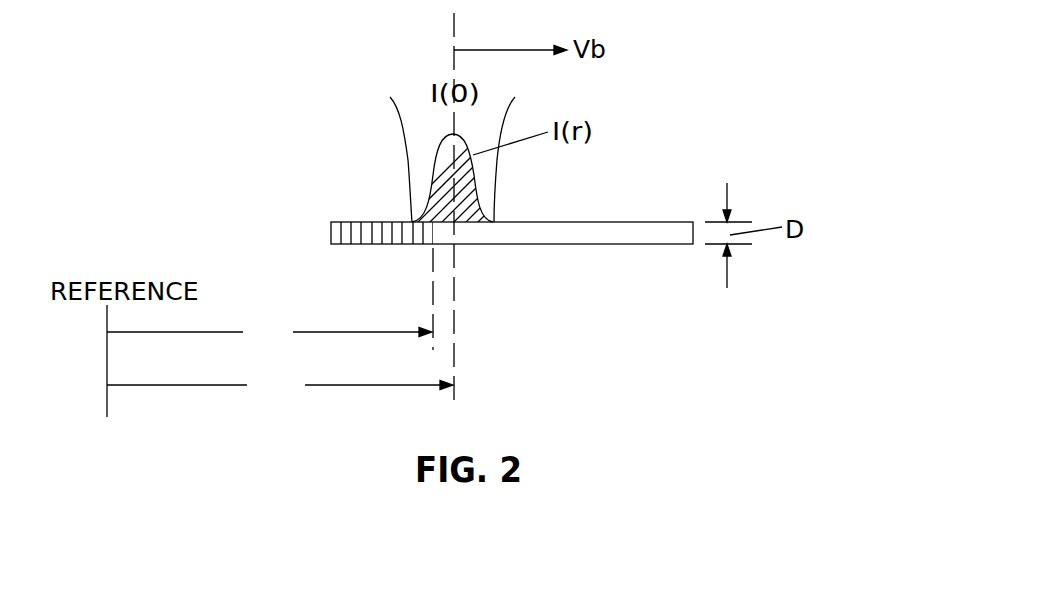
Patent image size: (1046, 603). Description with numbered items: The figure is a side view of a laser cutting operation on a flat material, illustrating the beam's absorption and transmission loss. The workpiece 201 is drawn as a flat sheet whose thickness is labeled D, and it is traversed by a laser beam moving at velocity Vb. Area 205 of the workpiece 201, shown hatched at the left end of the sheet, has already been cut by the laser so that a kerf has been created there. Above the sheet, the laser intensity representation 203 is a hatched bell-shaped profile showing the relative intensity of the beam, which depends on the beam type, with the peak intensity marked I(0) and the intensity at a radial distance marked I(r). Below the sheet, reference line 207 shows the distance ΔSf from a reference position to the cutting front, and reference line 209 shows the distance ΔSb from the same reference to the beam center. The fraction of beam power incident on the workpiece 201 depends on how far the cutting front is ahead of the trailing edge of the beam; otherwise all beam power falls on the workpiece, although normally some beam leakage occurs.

The workpiece 201 is at (607, 244).
The laser intensity representation 203 is at (447, 135).
The area already cut 205 is at (365, 245).
The reference line 207 is at (208, 332).
The reference line 209 is at (208, 385).